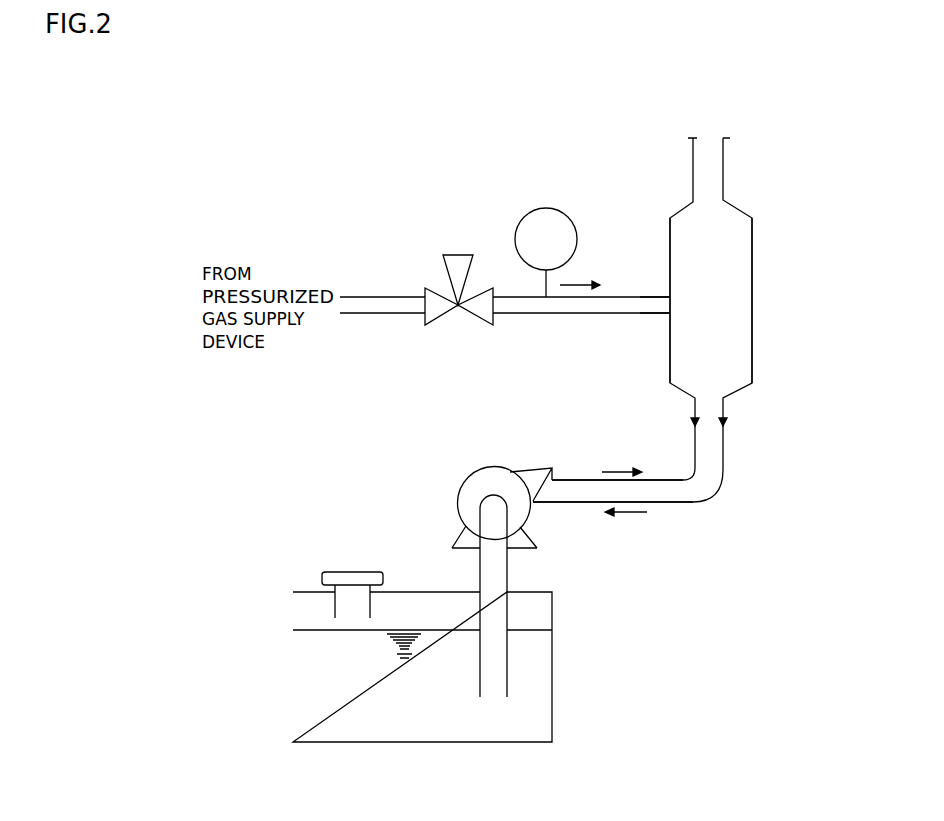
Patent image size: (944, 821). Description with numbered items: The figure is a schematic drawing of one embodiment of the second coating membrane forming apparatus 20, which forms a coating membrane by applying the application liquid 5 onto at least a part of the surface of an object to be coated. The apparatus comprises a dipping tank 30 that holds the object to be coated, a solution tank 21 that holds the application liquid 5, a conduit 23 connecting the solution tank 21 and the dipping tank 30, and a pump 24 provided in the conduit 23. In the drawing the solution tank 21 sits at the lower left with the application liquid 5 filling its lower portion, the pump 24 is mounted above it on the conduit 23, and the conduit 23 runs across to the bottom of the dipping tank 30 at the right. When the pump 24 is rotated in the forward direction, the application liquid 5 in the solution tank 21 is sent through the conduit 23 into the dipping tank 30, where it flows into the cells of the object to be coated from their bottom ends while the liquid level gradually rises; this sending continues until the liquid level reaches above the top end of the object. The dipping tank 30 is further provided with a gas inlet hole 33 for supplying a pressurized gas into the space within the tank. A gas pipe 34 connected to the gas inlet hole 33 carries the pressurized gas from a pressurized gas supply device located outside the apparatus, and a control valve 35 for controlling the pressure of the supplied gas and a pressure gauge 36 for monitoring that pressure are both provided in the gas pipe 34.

The second coating membrane forming apparatus 20 is at (758, 184).
The dipping tank 30 is at (752, 265).
The gas inlet hole 33 is at (673, 303).
The gas pipe 34 is at (385, 297).
The control valve 35 is at (437, 295).
The pressure gauge 36 is at (552, 209).
The conduit 23 is at (580, 480).
The pump 24 is at (470, 490).
The application liquid 5 is at (325, 670).
The solution tank 21 is at (552, 663).